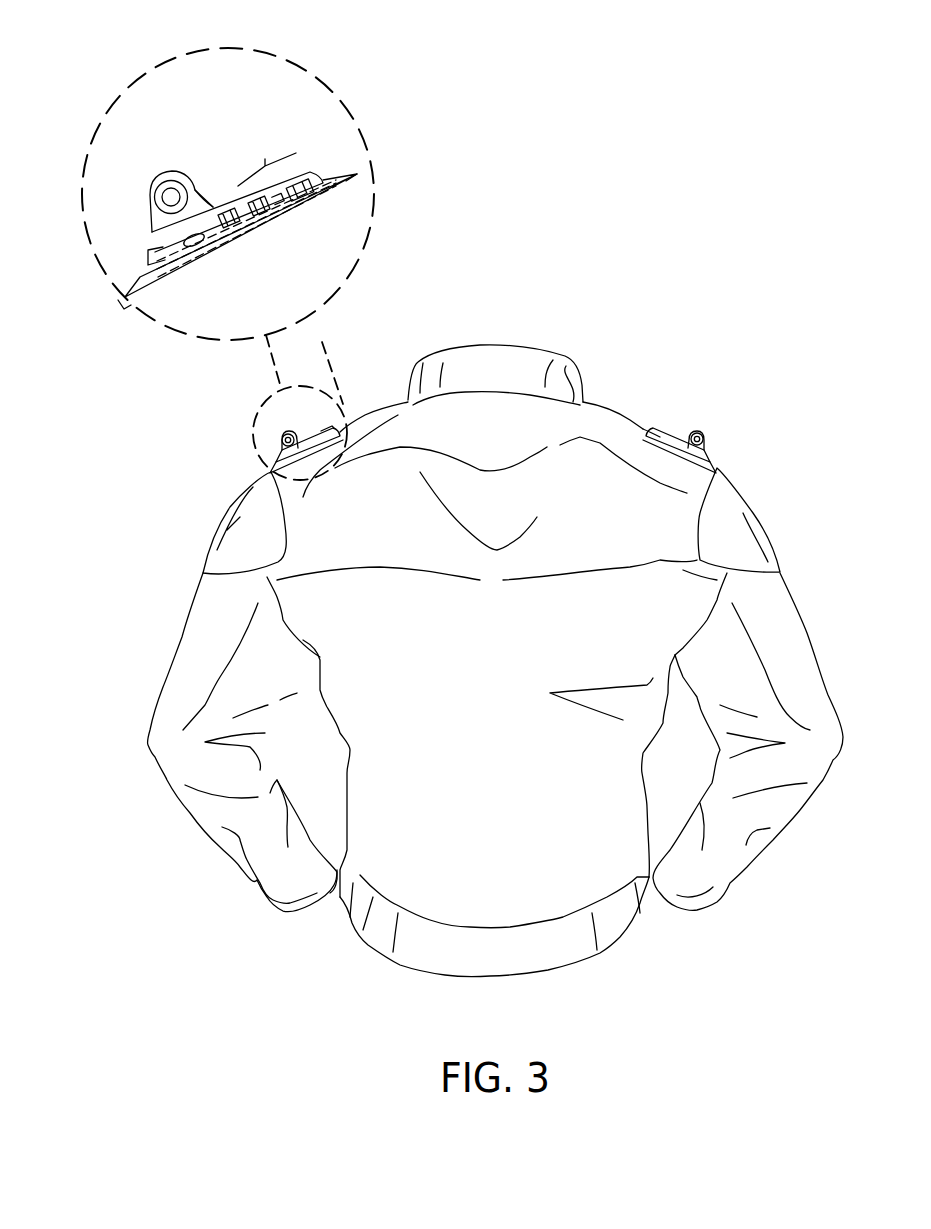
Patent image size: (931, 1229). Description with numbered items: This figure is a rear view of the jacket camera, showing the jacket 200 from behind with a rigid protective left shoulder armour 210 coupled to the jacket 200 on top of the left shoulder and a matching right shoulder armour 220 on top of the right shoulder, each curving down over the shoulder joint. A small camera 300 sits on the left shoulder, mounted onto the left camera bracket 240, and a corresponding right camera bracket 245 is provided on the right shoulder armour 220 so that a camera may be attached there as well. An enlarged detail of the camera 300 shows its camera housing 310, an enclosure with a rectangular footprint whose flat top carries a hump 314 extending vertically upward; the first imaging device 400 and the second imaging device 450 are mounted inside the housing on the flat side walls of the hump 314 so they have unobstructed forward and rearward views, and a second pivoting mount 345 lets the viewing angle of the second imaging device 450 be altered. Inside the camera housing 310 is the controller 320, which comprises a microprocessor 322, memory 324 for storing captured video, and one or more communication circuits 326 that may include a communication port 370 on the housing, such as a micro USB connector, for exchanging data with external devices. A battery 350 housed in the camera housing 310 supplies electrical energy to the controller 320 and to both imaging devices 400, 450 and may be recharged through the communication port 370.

The jacket 200 is at (557, 845).
The left shoulder armour 210 is at (232, 528).
The right shoulder armour 220 is at (757, 525).
The left camera bracket 240 is at (309, 430).
The right camera bracket 245 is at (660, 437).
The camera 300 is at (309, 430).
The camera housing 310 is at (310, 172).
The hump 314 is at (171, 197).
The controller 320 is at (265, 158).
The microprocessor 322 is at (275, 210).
The memory 324 is at (297, 193).
The communication circuits 326 is at (348, 177).
The second pivoting mount 345 is at (191, 176).
The battery 350 is at (124, 298).
The communication port 370 is at (147, 252).
The first imaging device 400 is at (697, 431).
The second imaging device 450 is at (153, 188).